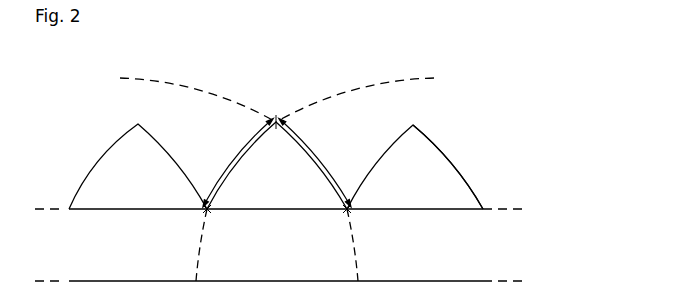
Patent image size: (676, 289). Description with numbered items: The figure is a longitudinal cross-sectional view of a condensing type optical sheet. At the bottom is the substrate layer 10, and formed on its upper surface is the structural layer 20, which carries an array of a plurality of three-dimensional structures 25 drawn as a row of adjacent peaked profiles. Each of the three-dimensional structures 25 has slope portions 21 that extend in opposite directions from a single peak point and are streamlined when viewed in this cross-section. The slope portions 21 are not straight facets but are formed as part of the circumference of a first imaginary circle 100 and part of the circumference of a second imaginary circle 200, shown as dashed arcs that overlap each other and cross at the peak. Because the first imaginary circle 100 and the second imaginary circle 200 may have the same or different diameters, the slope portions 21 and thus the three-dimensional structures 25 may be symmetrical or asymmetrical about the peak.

The substrate layer 10 is at (530, 211).
The structural layer 20 is at (530, 130).
The slope portions 21 is at (277, 163).
The 3D structures 25 is at (426, 129).
The first imaginary circle 100 is at (172, 79).
The second imaginary circle 200 is at (391, 79).